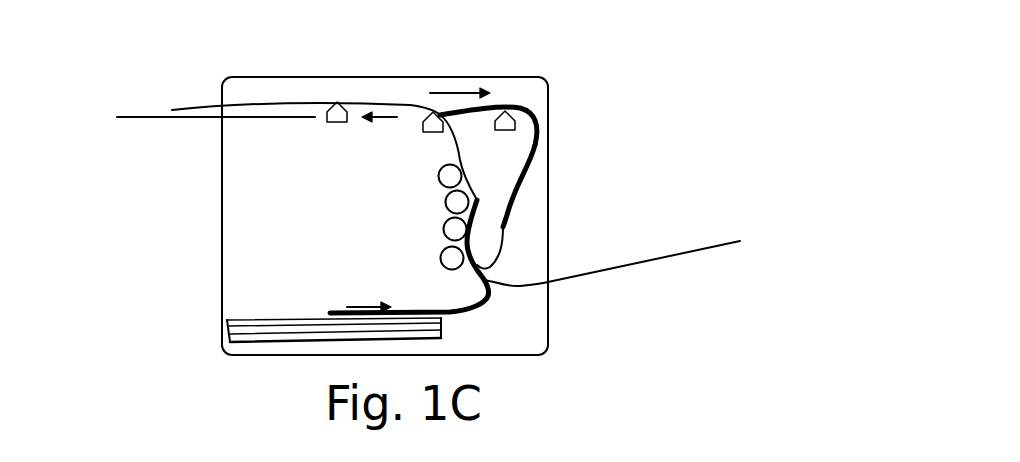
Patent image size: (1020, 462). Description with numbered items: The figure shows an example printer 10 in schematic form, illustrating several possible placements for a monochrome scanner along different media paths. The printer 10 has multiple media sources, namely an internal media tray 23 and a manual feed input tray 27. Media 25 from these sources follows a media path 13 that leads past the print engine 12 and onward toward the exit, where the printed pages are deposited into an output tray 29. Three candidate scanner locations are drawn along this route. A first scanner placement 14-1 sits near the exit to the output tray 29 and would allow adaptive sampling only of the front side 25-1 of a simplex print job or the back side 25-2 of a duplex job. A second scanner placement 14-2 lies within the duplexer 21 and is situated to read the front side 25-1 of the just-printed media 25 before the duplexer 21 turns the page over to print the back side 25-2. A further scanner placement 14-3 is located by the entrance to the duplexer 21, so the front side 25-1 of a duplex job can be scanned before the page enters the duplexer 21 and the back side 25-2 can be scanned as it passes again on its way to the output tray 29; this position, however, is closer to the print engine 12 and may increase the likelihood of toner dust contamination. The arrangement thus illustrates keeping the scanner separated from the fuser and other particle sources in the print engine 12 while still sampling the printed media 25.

The printer 10 is at (272, 77).
The print engine 12 is at (425, 220).
The media path 13 is at (383, 103).
The first scanner placement 14-1 is at (335, 123).
The second scanner placement 14-2 is at (507, 131).
The scanner placement 14-3 is at (432, 133).
The duplexer 21 is at (562, 138).
The internal media tray 23 is at (443, 320).
The media 25 is at (248, 316).
The front side 25-1 is at (448, 308).
The back side 25-2 is at (528, 168).
The manual feed input tray 27 is at (562, 279).
The output tray 29 is at (177, 118).